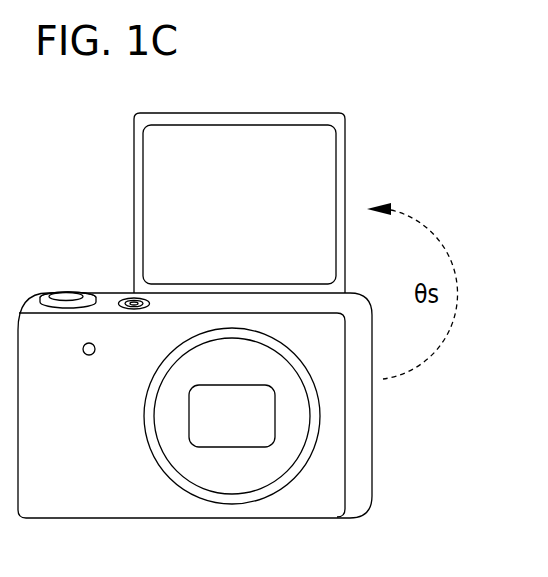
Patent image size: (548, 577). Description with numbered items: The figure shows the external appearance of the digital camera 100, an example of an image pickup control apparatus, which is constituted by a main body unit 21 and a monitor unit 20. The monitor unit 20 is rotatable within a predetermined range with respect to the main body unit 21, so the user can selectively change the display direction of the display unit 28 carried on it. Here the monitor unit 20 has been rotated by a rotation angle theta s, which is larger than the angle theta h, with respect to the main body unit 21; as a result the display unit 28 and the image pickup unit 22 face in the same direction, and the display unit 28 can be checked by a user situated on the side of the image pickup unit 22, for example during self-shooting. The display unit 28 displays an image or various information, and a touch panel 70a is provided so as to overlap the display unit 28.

The digital camera 100 is at (254, 338).
The monitor unit 20 is at (313, 203).
The main body unit 21 is at (68, 473).
The image pickup unit 22 is at (240, 430).
The display unit 28 is at (318, 204).
The touch panel 70a is at (282, 179).